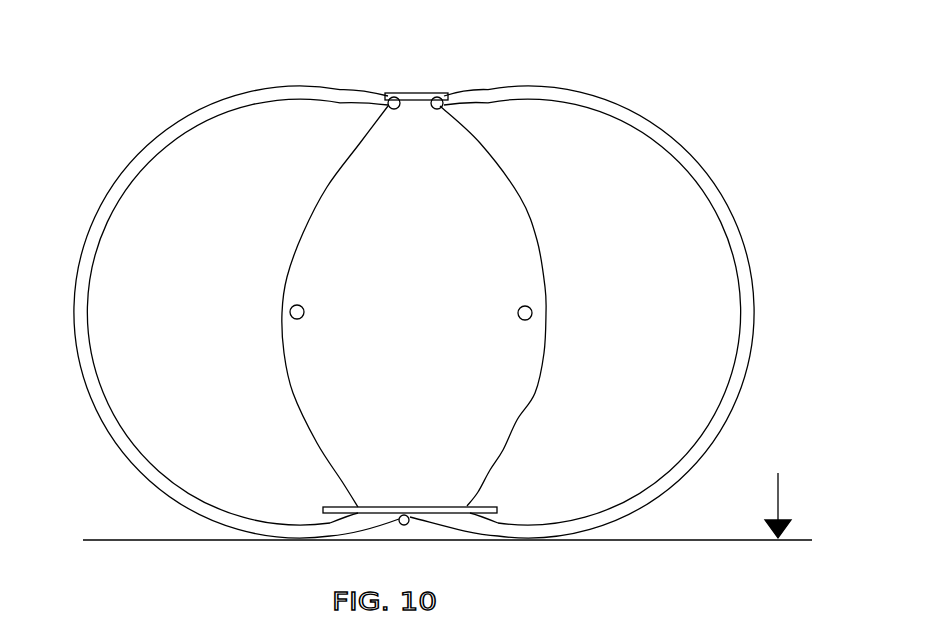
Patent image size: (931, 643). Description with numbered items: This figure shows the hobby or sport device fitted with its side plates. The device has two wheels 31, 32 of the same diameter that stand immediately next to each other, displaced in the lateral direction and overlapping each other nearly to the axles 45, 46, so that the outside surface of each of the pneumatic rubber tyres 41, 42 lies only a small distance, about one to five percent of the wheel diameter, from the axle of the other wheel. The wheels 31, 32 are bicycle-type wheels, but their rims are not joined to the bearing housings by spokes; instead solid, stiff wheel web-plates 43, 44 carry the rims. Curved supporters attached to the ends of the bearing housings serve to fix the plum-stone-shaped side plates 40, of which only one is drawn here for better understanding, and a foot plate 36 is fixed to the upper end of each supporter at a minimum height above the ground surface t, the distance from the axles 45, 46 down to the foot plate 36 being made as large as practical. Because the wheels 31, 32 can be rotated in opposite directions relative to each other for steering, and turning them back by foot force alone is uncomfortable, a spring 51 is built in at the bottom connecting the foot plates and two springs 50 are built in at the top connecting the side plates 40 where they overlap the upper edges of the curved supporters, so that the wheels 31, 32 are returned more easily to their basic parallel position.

The wheel 31 is at (142, 146).
The wheel 32 is at (716, 175).
The foot plate 36 is at (493, 510).
The side plate 40 is at (522, 196).
The tyre 41 is at (203, 117).
The tyre 42 is at (673, 145).
The wheel web-plate 43 is at (200, 256).
The wheel web-plate 44 is at (648, 251).
The axle 45 is at (290, 313).
The axle 46 is at (528, 317).
The spring 50 is at (386, 94).
The spring 51 is at (401, 523).
The ground surface t is at (779, 488).